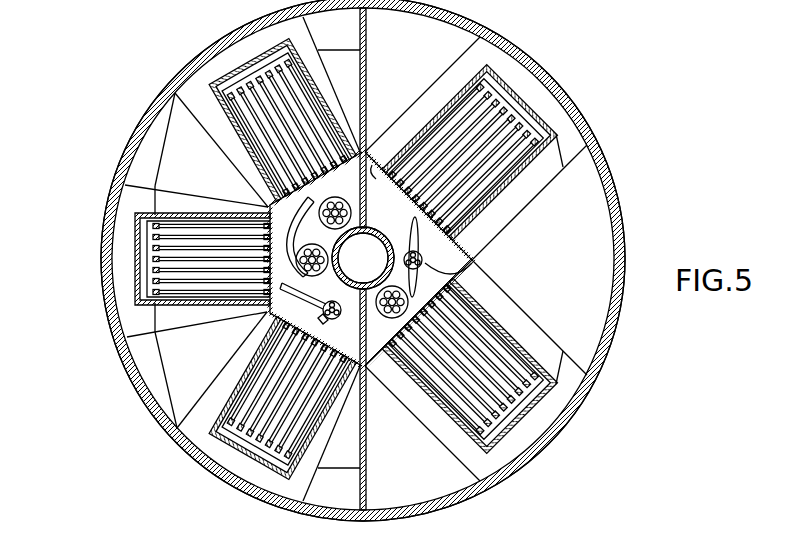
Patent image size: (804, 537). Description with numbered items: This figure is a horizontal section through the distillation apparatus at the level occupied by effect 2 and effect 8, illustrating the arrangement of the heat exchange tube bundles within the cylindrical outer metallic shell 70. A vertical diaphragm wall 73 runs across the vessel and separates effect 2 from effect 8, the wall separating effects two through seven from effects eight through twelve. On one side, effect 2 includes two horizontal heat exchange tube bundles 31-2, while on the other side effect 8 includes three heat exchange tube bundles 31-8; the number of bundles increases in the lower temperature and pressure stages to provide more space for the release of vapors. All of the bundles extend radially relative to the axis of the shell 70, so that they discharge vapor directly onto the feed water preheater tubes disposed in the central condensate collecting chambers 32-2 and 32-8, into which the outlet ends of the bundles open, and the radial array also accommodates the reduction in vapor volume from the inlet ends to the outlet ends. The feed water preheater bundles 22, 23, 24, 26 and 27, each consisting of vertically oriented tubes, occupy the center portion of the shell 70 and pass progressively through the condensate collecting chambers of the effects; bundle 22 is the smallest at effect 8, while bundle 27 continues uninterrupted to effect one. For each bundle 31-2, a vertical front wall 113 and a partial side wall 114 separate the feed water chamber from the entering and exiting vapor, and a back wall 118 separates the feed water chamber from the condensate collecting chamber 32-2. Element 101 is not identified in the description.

The effect 2 is at (634, 202).
The effect 8 is at (150, 434).
The feed water preheater bundle 22 is at (336, 320).
The feed water preheater bundle 23 is at (328, 257).
The feed water preheater bundle 24 is at (333, 197).
The feed water preheater bundle 26 is at (474, 268).
The feed water preheater bundle 27 is at (403, 355).
The heat exchange tube bundle 31-8 is at (228, 120).
The heat exchange tube bundle 31-2 is at (495, 187).
The condensate collecting chamber 32-8 is at (252, 208).
The condensate collecting chamber 32-2 is at (380, 158).
The outer metallic shell 70 is at (614, 322).
The vertical diaphragm wall 73 is at (367, 455).
The paddle 101 is at (410, 232).
The vertical front wall 113 is at (523, 120).
The partial side wall 114 is at (447, 97).
The back wall 118 is at (376, 160).